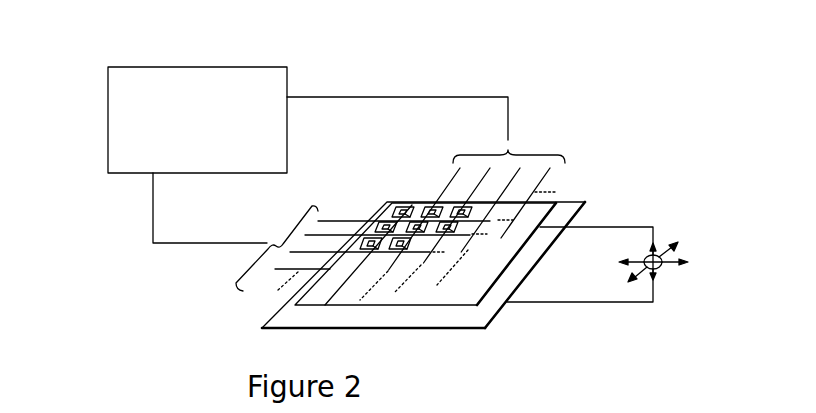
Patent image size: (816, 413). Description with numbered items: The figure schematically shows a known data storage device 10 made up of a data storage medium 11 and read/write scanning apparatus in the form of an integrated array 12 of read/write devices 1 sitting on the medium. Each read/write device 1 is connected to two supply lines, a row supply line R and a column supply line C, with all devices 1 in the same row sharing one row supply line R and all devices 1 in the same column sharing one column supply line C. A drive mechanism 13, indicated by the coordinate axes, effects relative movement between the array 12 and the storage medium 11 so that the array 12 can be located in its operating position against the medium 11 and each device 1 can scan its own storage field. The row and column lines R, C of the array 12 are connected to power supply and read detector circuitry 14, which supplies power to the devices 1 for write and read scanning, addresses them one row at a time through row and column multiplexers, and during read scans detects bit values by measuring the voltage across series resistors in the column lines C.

The data storage device 10 is at (560, 85).
The data storage medium 11 is at (430, 328).
The integrated array 12 is at (480, 298).
The drive mechanism 13 is at (663, 272).
The power supply and read detector circuitry 14 is at (220, 67).
The read/write device 1 is at (427, 199).
The row supply line R is at (344, 237).
The column supply line C is at (522, 192).